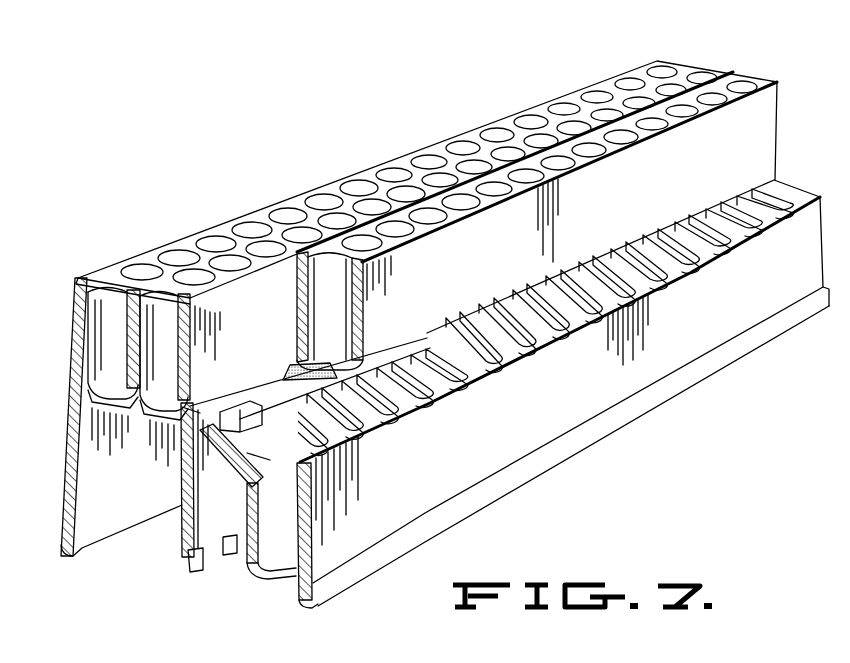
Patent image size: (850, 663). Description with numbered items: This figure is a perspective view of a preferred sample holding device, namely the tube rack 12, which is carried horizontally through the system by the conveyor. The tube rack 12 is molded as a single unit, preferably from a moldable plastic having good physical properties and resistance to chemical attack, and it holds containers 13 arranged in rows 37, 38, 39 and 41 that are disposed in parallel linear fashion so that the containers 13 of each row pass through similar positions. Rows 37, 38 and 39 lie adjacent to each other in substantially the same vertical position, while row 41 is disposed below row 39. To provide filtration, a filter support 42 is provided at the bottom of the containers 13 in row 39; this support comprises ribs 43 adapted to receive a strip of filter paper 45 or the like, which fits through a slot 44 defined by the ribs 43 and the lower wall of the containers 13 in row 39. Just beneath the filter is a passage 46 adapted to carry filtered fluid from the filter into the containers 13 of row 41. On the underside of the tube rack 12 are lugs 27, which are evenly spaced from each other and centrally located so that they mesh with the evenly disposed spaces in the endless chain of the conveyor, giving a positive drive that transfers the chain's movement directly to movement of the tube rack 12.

The tube rack 12 is at (272, 160).
The containers 13 is at (478, 190).
The lugs 27 is at (228, 553).
The row 37 is at (650, 68).
The row 38 is at (700, 75).
The row 39 is at (744, 84).
The row 41 is at (780, 202).
The filter support 42 is at (290, 367).
The ribs 43 is at (243, 417).
The slot 44 is at (298, 360).
The filter paper 45 is at (347, 350).
The passage 46 is at (248, 452).